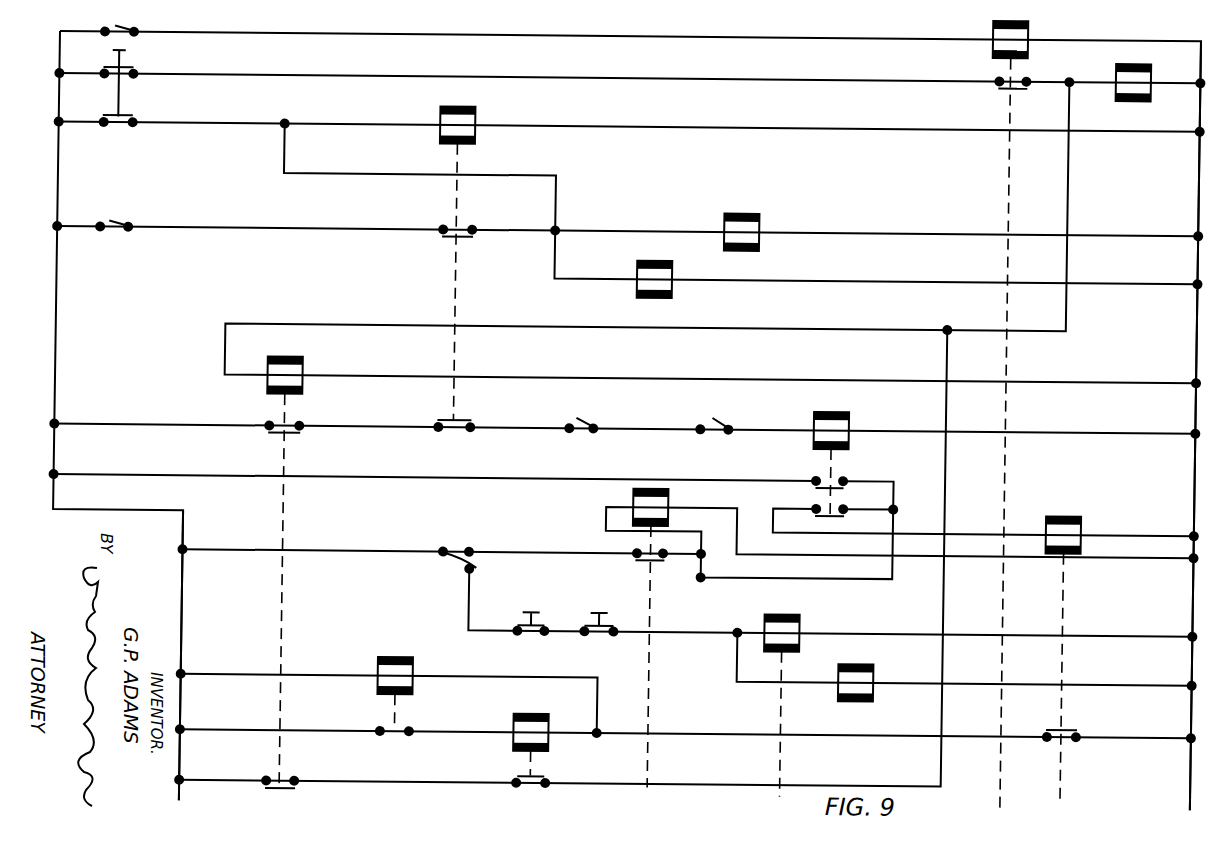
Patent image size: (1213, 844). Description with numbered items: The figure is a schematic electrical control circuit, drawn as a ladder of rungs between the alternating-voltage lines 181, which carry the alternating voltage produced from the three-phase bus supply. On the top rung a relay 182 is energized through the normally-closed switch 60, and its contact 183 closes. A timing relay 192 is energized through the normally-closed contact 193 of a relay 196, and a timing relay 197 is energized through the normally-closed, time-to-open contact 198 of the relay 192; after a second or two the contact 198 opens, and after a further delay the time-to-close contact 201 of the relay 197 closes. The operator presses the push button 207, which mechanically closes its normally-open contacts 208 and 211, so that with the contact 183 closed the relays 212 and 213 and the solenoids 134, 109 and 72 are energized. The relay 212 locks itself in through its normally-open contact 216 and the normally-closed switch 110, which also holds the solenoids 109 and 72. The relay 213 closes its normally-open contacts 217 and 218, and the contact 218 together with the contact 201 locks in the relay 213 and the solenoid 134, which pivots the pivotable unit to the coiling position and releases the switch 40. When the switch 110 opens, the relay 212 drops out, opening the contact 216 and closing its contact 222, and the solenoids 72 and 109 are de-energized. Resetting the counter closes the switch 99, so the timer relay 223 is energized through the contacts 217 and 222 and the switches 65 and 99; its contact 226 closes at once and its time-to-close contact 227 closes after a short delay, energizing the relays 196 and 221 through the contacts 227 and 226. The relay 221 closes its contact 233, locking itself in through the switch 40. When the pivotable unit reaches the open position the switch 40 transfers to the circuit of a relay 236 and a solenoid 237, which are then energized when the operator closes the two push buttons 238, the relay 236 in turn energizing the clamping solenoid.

The normally-closed switch 60 is at (130, 27).
The normally-open contact 208 is at (133, 66).
The push button 207 is at (120, 92).
The normally-open contact 211 is at (123, 116).
The relay 212 is at (477, 111).
The normally-open contact 216 is at (470, 233).
The normally-closed switch 110 is at (118, 229).
The solenoid 109 is at (762, 217).
The solenoid 72 is at (676, 267).
The relay 182 is at (1028, 24).
The contact 183 is at (1018, 81).
The solenoid 134 is at (1152, 64).
The relay 213 is at (308, 364).
The normally-open contact 217 is at (300, 431).
The contact 222 is at (470, 415).
The switch 99 is at (584, 413).
The switch 65 is at (719, 412).
The timer relay 223 is at (855, 413).
The normally-open time-to-close contact 227 is at (846, 482).
The contact 226 is at (846, 510).
The relay 221 is at (675, 492).
The switch 40 is at (458, 548).
The contact 233 is at (665, 557).
The relay 196 is at (1088, 518).
The lines 181 is at (192, 578).
The push buttons 238 is at (535, 622).
The relay 236 is at (808, 620).
The solenoid 237 is at (883, 668).
The timing relay 192 is at (422, 668).
The normally-closed time-to-open contact 198 is at (406, 731).
The timing relay 197 is at (559, 742).
The time-to-close contact 201 is at (545, 781).
The normally-open contact 218 is at (300, 786).
The normally-closed contact 193 is at (1077, 721).